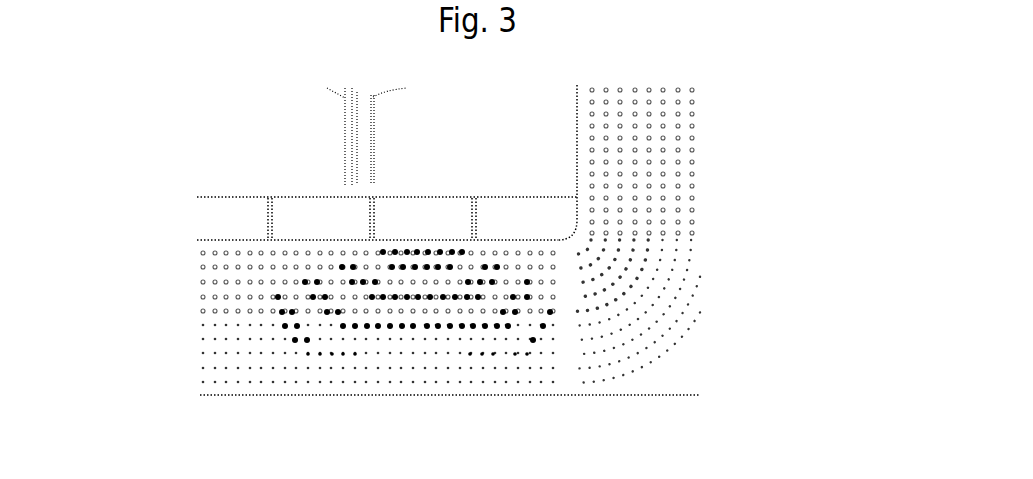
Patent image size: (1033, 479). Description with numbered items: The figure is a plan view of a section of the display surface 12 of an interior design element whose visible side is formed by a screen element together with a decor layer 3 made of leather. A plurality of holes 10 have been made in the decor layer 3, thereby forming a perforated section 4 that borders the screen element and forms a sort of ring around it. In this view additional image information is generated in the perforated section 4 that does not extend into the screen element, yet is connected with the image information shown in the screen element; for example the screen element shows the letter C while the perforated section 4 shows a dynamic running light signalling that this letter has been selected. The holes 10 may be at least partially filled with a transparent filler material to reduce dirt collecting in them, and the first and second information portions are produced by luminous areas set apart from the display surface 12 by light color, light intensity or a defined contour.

The holes 10 is at (605, 95).
The perforated section 4 is at (652, 210).
The decor layer 3 is at (686, 353).
The display surface 12 is at (550, 253).